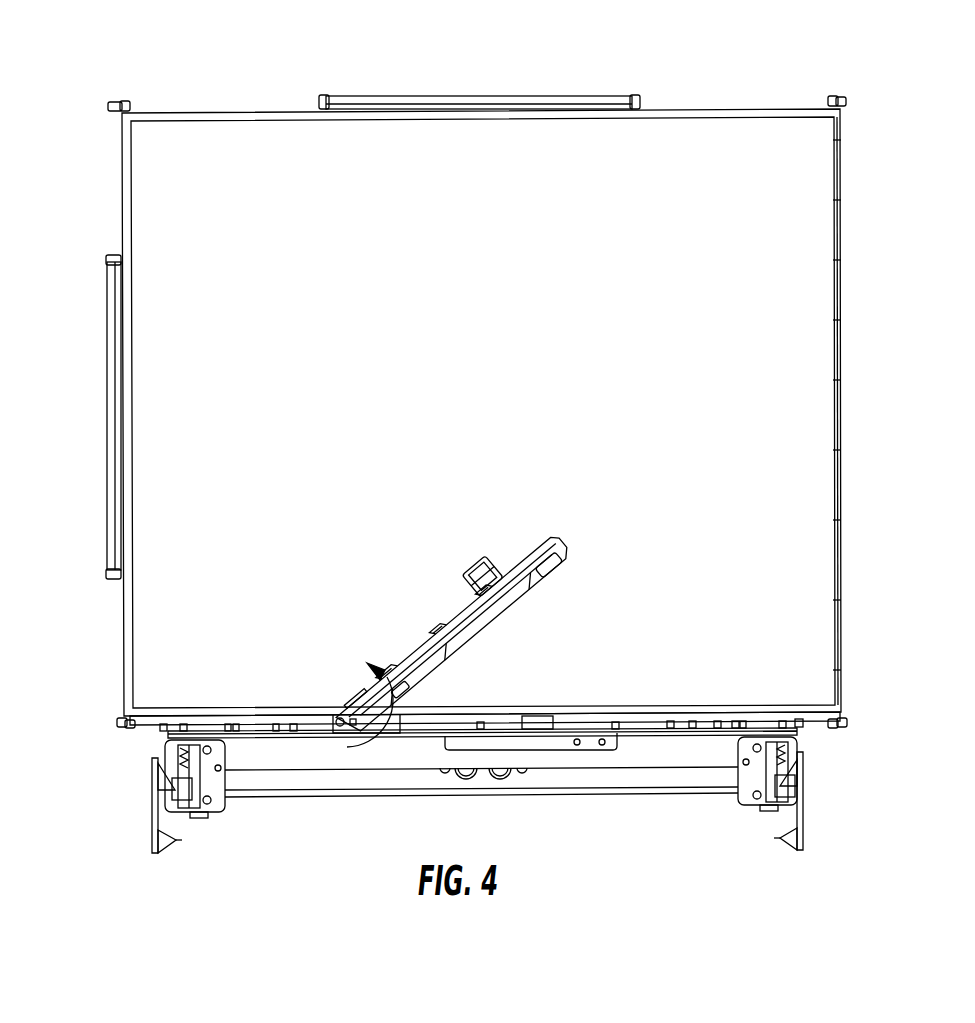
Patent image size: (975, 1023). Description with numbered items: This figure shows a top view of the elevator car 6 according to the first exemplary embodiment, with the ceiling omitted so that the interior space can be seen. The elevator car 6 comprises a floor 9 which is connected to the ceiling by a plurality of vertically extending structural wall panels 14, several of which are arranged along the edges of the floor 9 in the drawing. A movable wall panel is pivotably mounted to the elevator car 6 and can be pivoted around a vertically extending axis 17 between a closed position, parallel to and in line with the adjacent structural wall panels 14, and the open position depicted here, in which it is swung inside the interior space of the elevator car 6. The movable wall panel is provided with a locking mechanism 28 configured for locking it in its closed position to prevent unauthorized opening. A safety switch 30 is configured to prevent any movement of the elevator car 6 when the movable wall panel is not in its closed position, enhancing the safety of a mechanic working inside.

The elevator car 6 is at (813, 54).
The floor 9 is at (789, 341).
The structural wall panels 14 is at (270, 107).
The vertically extending axis 17 is at (340, 716).
The locking mechanism 28 is at (578, 550).
The safety switch 30 is at (536, 718).